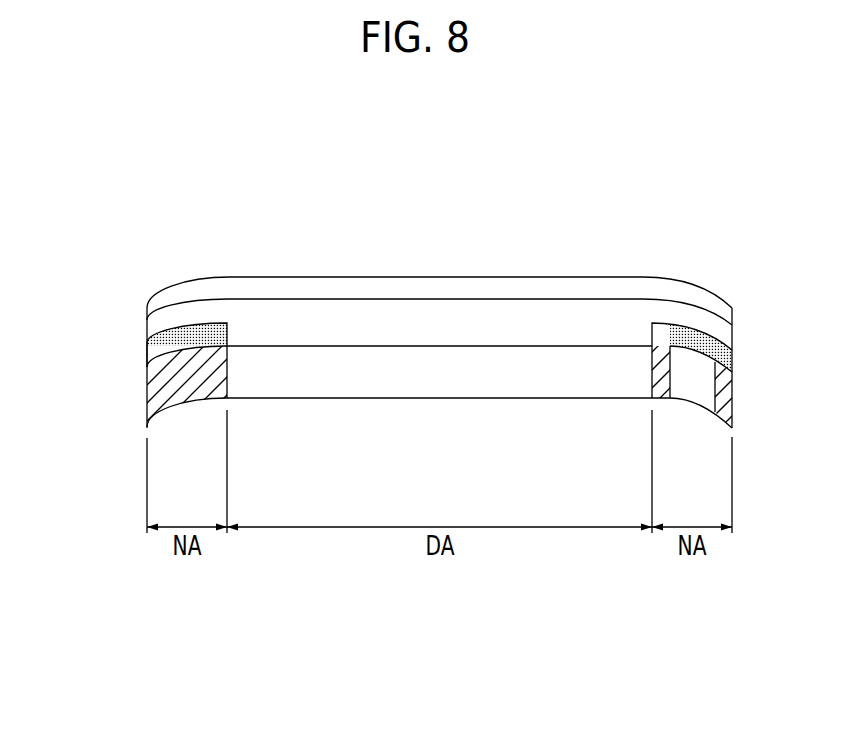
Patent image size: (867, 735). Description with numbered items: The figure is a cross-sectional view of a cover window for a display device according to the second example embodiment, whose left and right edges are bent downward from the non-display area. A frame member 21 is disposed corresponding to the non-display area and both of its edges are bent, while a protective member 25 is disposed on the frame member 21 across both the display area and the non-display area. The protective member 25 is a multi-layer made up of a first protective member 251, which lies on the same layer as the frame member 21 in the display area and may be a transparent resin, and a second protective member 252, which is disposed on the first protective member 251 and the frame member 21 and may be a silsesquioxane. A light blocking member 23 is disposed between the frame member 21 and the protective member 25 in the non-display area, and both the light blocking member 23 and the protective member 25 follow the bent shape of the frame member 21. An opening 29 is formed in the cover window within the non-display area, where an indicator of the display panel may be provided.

The frame member 21 is at (152, 385).
The light blocking member 23 is at (170, 343).
The protective member 25 is at (439, 251).
The first protective member 251 is at (395, 219).
The second protective member 252 is at (411, 290).
The opening 29 is at (694, 383).